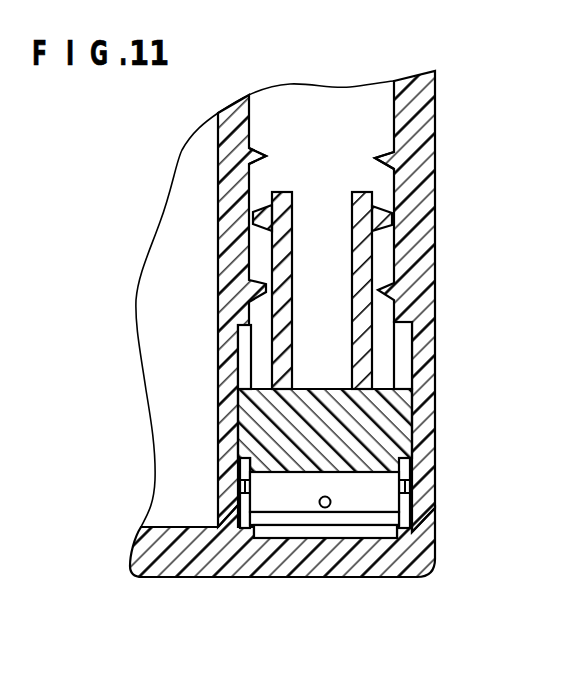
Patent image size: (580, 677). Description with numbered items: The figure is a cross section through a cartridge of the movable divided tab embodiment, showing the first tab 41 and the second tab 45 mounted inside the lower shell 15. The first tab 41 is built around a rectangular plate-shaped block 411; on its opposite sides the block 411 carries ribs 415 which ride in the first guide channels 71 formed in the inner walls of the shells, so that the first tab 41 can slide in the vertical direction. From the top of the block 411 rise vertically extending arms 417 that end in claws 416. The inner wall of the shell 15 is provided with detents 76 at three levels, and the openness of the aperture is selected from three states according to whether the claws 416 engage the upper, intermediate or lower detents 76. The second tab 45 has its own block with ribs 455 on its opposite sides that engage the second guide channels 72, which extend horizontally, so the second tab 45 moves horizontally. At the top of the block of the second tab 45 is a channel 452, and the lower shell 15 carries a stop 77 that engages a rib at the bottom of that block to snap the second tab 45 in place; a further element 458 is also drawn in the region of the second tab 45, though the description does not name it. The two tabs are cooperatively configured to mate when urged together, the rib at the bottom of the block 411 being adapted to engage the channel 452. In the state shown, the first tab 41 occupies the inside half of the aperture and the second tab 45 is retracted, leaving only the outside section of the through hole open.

The lower shell 15 is at (418, 103).
The second tab 45 is at (380, 500).
The detents 76 is at (266, 158).
The arms 417 is at (268, 272).
The claws 416 is at (256, 214).
The first guide channels 71 is at (243, 358).
The first tab 41 is at (380, 412).
The ribs 415 is at (243, 433).
The ribs 455 is at (241, 492).
The second guide channels 72 is at (410, 488).
The pin 458 is at (322, 513).
The channel 452 is at (358, 520).
The stop 77 is at (339, 535).
The block 411 is at (290, 473).